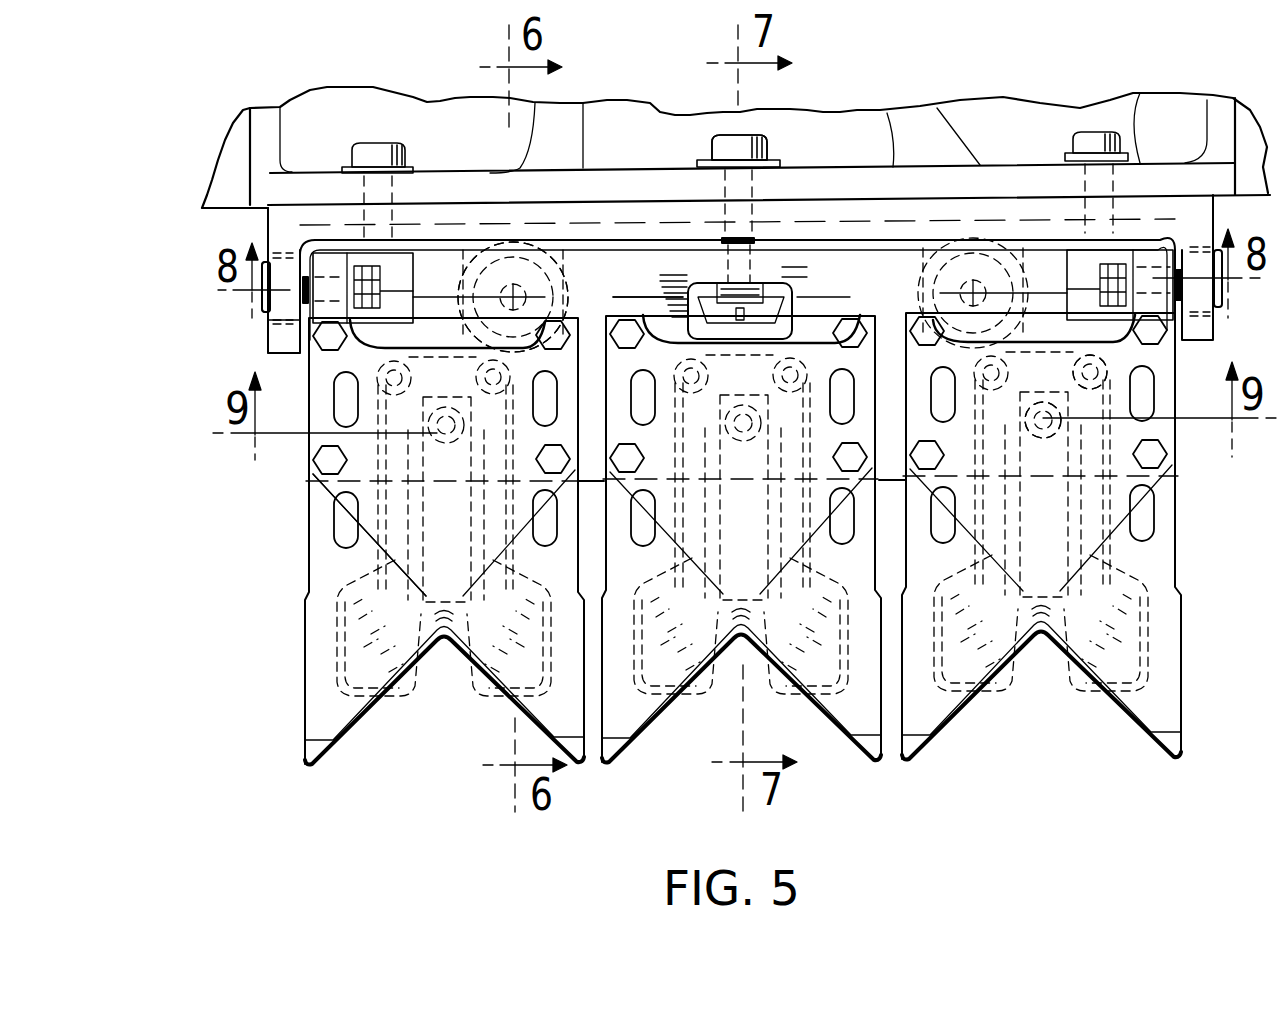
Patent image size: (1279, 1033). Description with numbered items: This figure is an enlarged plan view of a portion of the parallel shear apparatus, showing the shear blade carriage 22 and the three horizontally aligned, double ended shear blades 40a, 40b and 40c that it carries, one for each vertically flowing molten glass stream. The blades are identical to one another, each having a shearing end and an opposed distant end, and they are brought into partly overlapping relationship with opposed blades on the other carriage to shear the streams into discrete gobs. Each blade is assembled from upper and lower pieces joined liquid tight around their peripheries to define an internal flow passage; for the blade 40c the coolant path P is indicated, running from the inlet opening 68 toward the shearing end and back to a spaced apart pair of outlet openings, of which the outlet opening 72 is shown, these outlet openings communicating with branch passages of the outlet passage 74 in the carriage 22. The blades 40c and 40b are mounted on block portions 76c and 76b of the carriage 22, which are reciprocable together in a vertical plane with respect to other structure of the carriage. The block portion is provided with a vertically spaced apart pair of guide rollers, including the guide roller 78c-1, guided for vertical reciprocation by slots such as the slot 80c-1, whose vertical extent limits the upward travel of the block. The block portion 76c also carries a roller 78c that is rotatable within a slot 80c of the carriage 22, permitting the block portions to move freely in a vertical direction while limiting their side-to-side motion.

The shear blade carriage 22 is at (1140, 128).
The shear blade 40a is at (940, 713).
The shear blade 40b is at (643, 713).
The shear blade 40c is at (340, 713).
The inlet opening 68 is at (1042, 422).
The outlet opening 72 is at (913, 353).
The outlet passage 74 is at (903, 340).
The block portion 76b is at (620, 277).
The block portion 76c is at (431, 273).
The roller 78c is at (717, 220).
The slot 80c is at (770, 213).
The guide roller 78c-1 is at (293, 320).
The slot 80c-1 is at (275, 340).
The path P is at (390, 549).